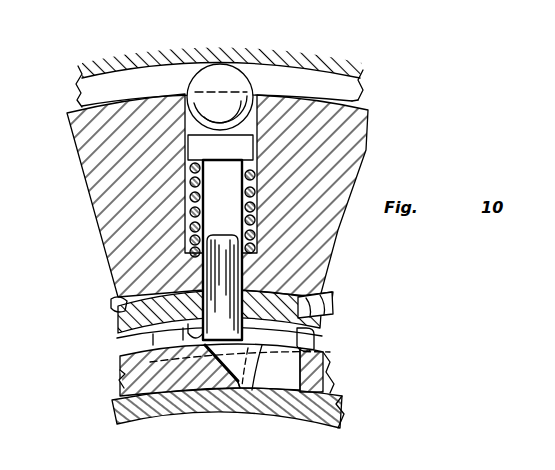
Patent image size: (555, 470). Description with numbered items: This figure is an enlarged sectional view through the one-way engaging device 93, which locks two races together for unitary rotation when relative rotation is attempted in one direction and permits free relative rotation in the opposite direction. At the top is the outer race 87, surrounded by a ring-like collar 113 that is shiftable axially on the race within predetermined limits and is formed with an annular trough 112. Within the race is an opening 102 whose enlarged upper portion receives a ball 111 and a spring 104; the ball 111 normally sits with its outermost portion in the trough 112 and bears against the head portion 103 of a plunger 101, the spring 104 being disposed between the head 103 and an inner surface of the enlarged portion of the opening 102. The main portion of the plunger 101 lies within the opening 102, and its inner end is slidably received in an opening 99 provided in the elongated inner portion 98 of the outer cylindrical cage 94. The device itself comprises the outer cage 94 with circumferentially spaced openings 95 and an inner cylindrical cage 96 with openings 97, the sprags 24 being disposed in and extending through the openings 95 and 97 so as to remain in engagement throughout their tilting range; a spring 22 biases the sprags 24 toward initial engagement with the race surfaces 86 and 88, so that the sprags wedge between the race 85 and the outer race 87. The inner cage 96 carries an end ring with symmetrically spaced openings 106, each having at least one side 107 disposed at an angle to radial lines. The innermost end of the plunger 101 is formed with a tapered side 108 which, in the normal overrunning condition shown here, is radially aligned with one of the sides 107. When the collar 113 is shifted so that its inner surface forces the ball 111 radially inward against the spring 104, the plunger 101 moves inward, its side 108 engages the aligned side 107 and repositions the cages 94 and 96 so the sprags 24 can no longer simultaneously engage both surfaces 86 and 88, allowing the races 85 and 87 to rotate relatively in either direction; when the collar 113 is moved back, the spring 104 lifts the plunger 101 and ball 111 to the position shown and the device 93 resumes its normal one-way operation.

The ball 111 is at (221, 74).
The ring-like collar 113 is at (78, 70).
The annular trough 112 is at (357, 88).
The outer race 87 is at (90, 173).
The head portion 103 is at (252, 148).
The spring 104 is at (188, 186).
The opening 102 is at (258, 190).
The opening 99 is at (220, 246).
The plunger 101 is at (250, 268).
The opening 95 is at (328, 289).
The outer cylindrical cage 94 is at (114, 302).
The race surface 88 is at (117, 311).
The elongated inner portion 98 is at (326, 325).
The spring 22 is at (315, 343).
The one-way engaging device 93 is at (323, 352).
The sprag 24 is at (153, 337).
The opening 97 is at (338, 384).
The inner cylindrical cage 96 is at (118, 380).
The race surface 86 is at (110, 398).
The race 85 is at (334, 423).
The tapered side 108 is at (222, 388).
The side 107 is at (256, 366).
The opening 106 is at (268, 372).